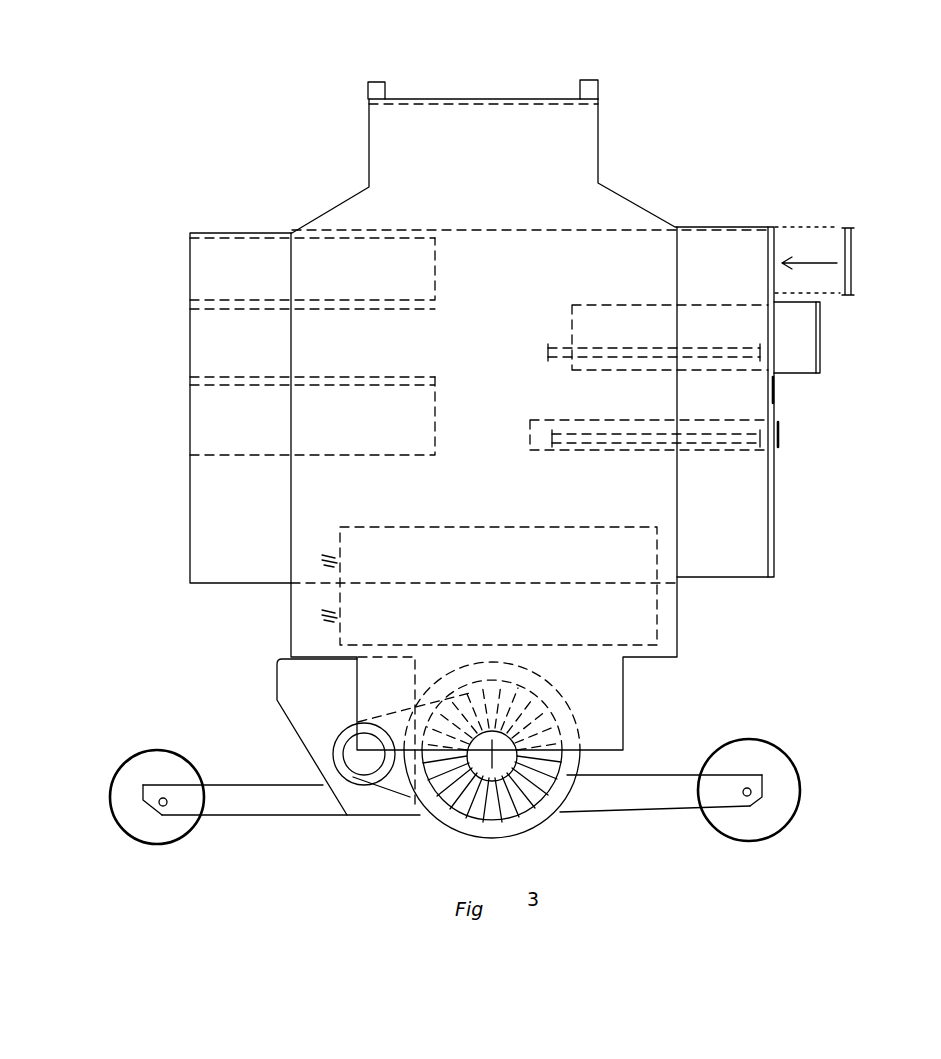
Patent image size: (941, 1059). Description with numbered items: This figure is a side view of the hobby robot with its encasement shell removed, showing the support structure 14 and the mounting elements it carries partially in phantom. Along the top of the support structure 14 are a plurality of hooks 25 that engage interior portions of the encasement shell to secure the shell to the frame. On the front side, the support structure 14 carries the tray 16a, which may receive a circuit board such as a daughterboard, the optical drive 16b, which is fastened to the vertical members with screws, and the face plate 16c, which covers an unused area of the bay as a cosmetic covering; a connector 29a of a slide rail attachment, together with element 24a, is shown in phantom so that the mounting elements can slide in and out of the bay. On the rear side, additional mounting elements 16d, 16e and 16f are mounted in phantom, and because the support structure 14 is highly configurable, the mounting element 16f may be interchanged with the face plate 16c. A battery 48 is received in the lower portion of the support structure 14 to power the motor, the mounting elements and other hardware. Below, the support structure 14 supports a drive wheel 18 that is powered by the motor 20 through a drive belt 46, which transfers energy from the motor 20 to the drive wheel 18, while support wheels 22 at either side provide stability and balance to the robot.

The support structure 14 is at (320, 170).
The hooks 25 is at (375, 77).
The mounting element 16f is at (190, 268).
The mounting element 16e is at (190, 341).
The mounting element 16d is at (190, 424).
The face plate 16c is at (857, 268).
The optical drive 16b is at (820, 345).
The conduit 24a is at (717, 352).
The tray 16a is at (782, 428).
The connector 29a is at (725, 440).
The battery 48 is at (640, 610).
The motor 20 is at (273, 685).
The support wheels 22 is at (130, 767).
The drive wheel 18 is at (588, 757).
The drive belt 46 is at (397, 793).